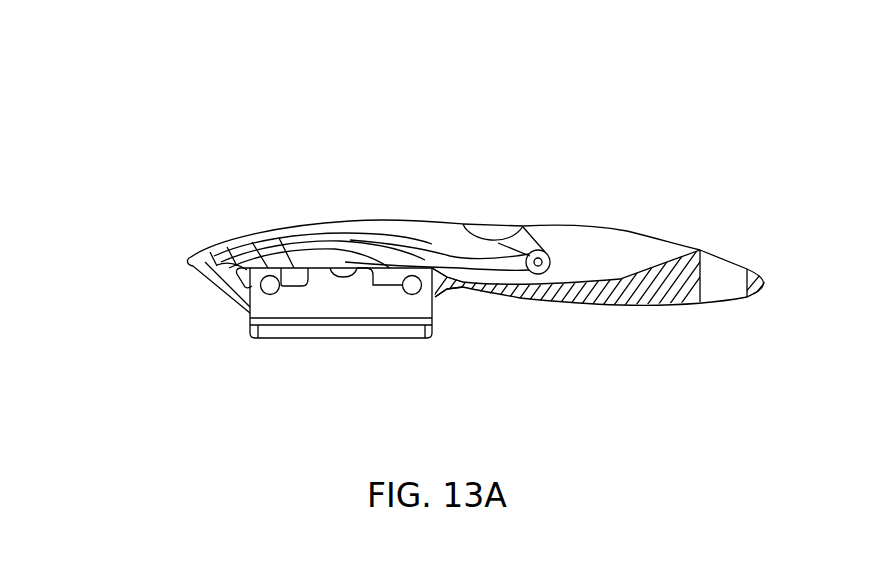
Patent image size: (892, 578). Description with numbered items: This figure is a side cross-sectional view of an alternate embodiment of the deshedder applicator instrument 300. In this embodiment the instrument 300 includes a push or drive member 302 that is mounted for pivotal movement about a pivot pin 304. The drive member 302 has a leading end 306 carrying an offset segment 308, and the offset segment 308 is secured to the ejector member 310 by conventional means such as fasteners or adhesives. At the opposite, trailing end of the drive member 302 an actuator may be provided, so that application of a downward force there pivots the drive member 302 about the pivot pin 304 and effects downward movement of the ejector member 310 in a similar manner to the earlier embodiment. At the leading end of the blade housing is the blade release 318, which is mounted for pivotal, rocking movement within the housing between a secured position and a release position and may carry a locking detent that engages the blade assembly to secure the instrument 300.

The applicator instrument 300 is at (624, 232).
The drive member 302 is at (443, 292).
The pivot pin 304 is at (541, 251).
The leading end 306 is at (379, 266).
The offset segment 308 is at (338, 266).
The ejector member 310 is at (297, 300).
The blade release 318 is at (227, 273).